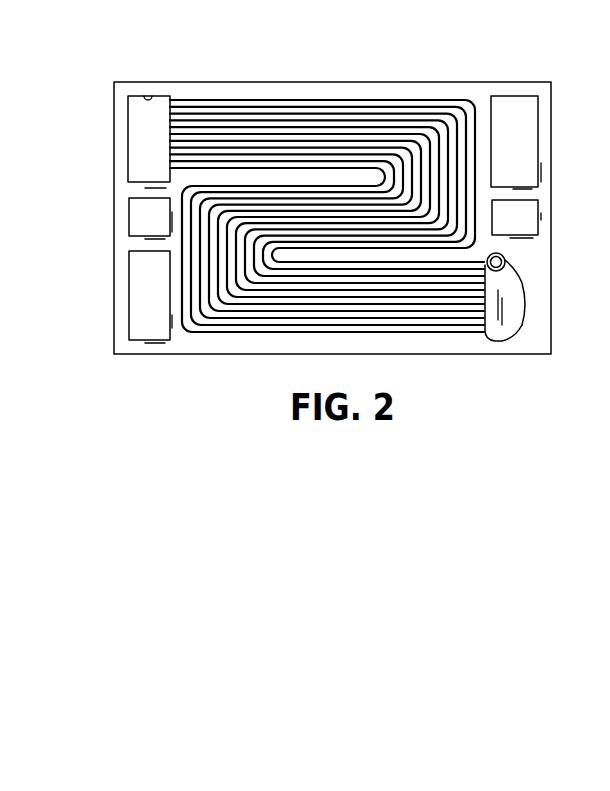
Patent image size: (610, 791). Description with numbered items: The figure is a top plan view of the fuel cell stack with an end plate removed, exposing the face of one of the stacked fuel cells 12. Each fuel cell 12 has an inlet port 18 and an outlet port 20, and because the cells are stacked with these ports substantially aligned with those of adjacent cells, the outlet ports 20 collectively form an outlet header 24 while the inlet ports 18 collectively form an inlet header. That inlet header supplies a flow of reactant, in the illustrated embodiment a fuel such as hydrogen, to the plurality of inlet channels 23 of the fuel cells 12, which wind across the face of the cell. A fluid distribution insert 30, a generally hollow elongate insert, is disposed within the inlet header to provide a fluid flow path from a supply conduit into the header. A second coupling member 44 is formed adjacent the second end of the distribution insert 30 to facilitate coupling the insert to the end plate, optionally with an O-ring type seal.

The fuel cell 12 is at (244, 90).
The outlet port 20 is at (147, 95).
The outlet header 24 is at (148, 153).
The inlet channels 23 is at (465, 333).
The second coupling member 44 is at (505, 271).
The inlet port 18 is at (520, 310).
The fluid distribution insert 30 is at (506, 321).